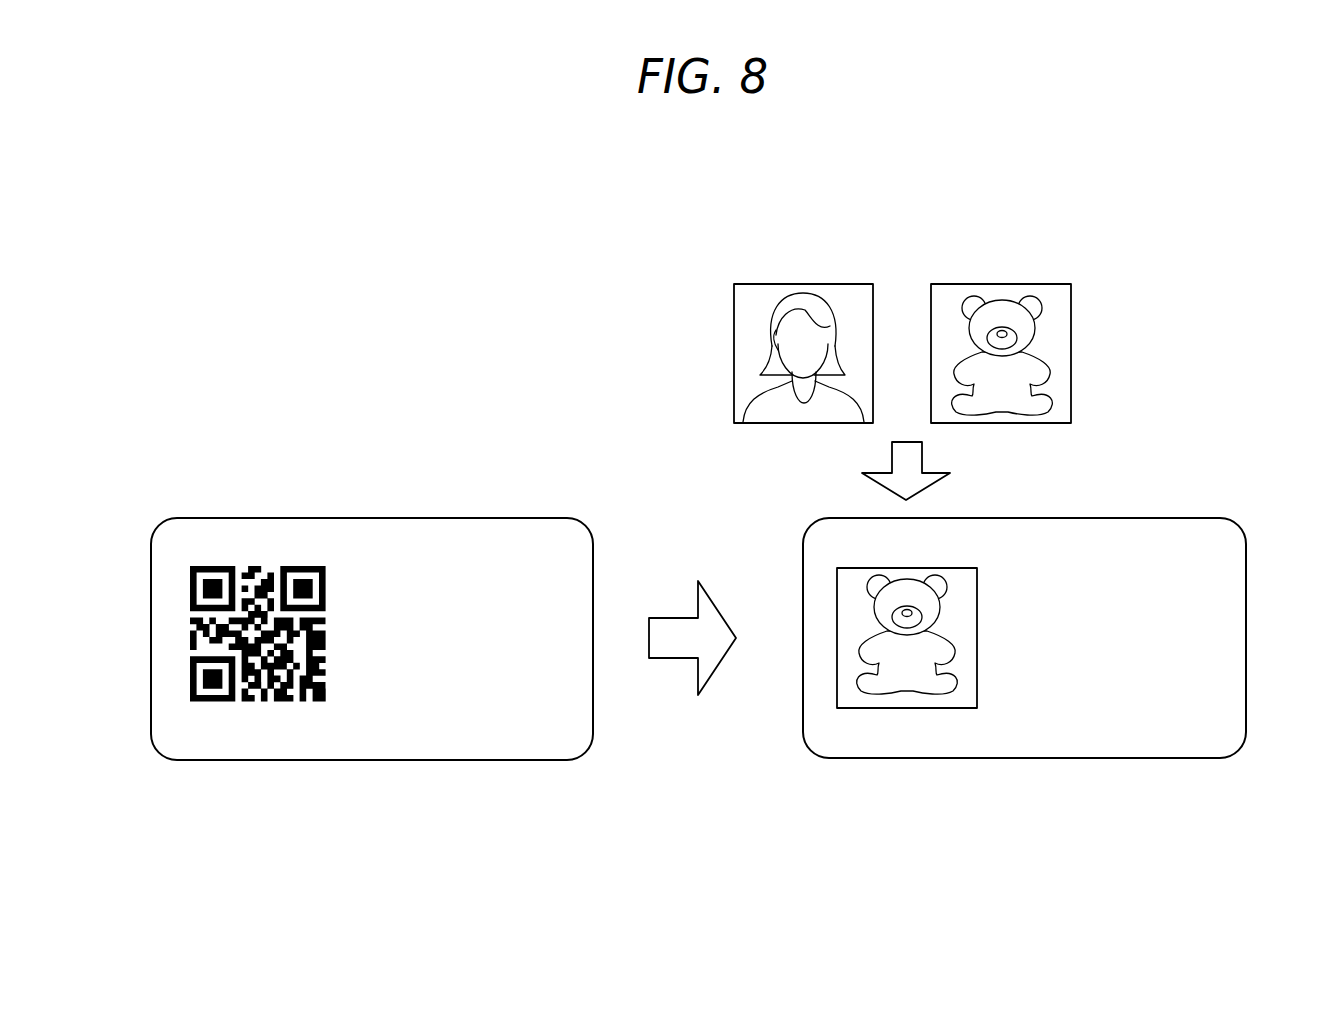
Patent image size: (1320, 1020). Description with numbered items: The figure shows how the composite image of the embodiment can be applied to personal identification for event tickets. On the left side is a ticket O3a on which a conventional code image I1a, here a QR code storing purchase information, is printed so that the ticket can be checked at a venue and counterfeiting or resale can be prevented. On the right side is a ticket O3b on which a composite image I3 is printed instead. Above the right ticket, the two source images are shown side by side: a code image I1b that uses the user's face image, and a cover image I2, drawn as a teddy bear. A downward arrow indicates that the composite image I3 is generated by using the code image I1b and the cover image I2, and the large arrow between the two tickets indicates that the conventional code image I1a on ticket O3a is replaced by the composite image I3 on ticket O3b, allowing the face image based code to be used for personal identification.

The ticket O3a is at (374, 636).
The code image I1a is at (267, 716).
The ticket O3b is at (1027, 636).
The composite image I3 is at (919, 716).
The code image I1b is at (804, 263).
The cover image I2 is at (1014, 263).